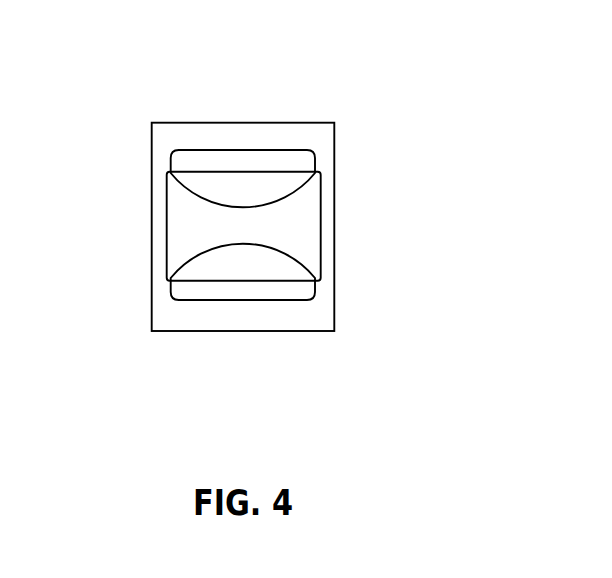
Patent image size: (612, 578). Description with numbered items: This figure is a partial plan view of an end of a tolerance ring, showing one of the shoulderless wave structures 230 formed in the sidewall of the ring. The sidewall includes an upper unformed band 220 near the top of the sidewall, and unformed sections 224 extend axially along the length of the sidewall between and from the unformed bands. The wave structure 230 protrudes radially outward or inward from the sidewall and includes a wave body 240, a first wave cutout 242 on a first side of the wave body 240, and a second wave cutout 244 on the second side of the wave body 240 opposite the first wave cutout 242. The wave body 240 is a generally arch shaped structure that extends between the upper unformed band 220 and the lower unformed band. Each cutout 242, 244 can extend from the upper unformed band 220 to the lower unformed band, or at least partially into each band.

The shoulderless wave structure 230 is at (393, 123).
The upper unformed band 220 is at (329, 203).
The unformed section 224 is at (158, 207).
The wave body 240 is at (293, 223).
The first wave cutout 242 is at (227, 167).
The second wave cutout 244 is at (276, 290).